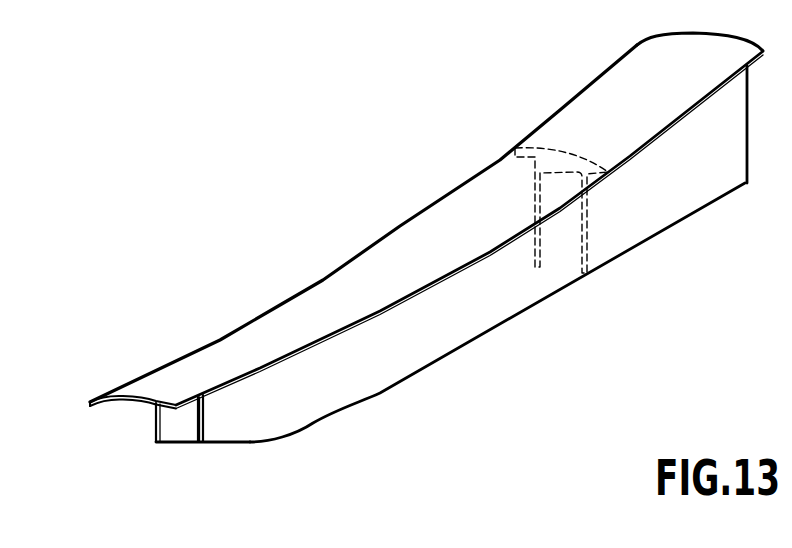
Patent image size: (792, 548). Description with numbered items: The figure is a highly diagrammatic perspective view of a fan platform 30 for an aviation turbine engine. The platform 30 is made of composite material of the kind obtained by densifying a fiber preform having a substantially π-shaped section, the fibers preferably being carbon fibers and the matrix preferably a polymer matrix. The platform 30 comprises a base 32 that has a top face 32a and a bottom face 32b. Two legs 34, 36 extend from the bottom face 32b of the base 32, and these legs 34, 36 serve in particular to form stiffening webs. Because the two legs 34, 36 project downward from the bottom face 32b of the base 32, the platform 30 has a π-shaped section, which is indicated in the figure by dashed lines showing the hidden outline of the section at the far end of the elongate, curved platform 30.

The fan platform 30 is at (403, 260).
The base 32 is at (403, 250).
The top face 32a is at (173, 372).
The bottom face 32b is at (123, 404).
The leg 34 is at (451, 277).
The leg 36 is at (450, 335).